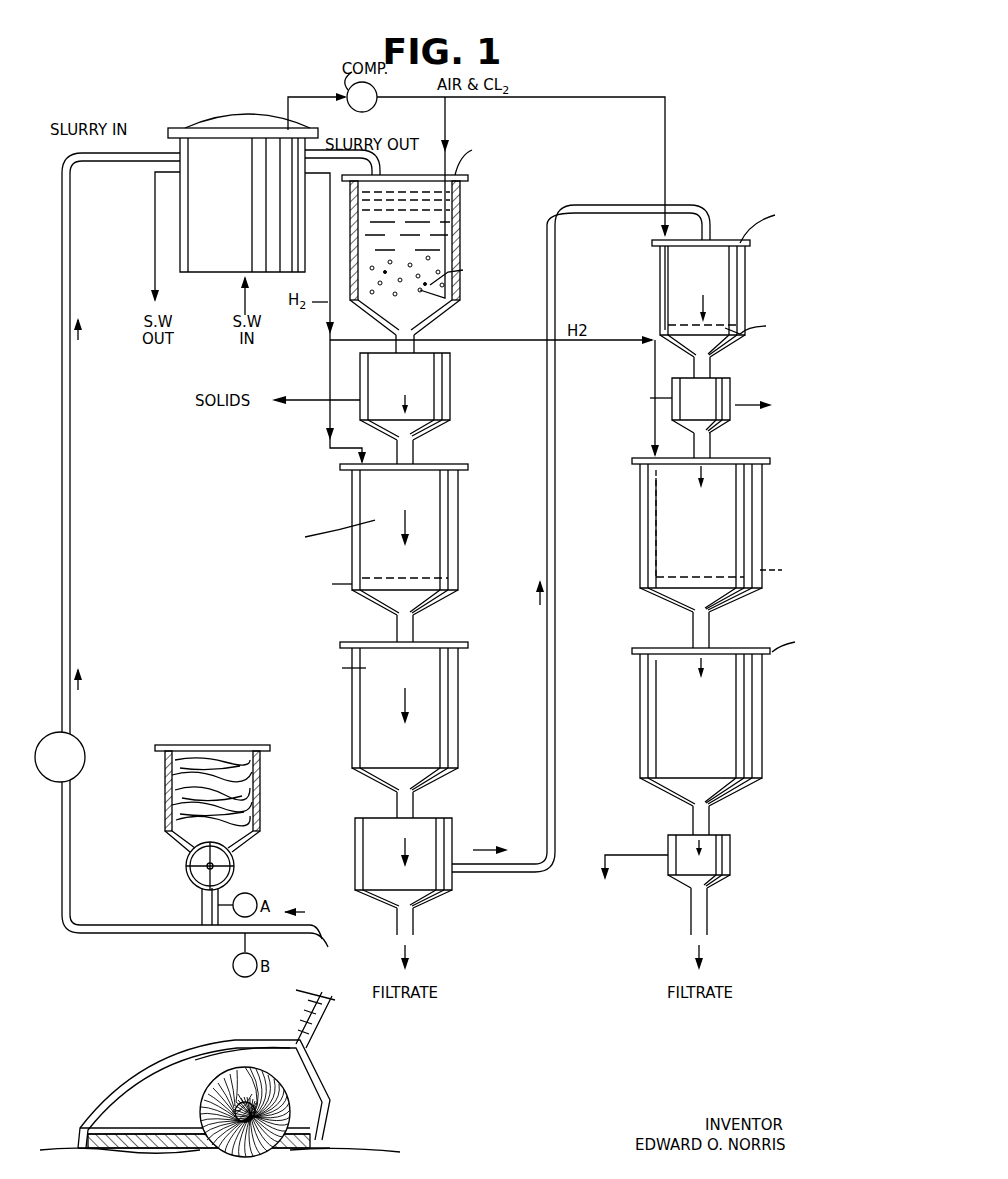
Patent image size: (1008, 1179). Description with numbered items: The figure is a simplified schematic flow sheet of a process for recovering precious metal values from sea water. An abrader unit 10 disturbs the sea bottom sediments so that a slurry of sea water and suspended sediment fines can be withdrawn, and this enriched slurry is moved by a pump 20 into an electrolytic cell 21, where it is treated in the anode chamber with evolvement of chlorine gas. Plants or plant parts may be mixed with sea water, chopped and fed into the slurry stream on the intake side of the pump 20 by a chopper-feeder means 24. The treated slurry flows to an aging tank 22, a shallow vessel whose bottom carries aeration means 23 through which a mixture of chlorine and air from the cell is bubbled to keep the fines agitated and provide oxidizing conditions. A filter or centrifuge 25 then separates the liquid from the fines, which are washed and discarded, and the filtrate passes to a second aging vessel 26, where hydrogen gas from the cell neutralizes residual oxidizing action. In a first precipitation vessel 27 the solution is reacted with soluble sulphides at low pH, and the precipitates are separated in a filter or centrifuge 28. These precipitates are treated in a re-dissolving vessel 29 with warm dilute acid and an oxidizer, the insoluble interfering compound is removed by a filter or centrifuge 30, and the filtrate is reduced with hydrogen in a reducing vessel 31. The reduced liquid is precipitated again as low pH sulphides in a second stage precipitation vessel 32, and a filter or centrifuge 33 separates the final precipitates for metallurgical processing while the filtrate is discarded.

The abrader unit 10 is at (312, 1080).
The pump 20 is at (85, 757).
The electrolytic cell 21 is at (232, 118).
The aging tank 22 is at (462, 214).
The aeration means 23 is at (394, 300).
The chopper-feeder means 24 is at (262, 797).
The filter or centrifuge 25 is at (443, 398).
The second aging vessel 26 is at (445, 530).
The first precipitation vessel 27 is at (445, 710).
The filter or centrifuge 28 is at (360, 858).
The re-dissolving vessel 29 is at (747, 283).
The filter or centrifuge 30 is at (740, 380).
The reducing vessel 31 is at (760, 537).
The second stage precipitation vessel 32 is at (760, 712).
The filter or centrifuge 33 is at (730, 860).